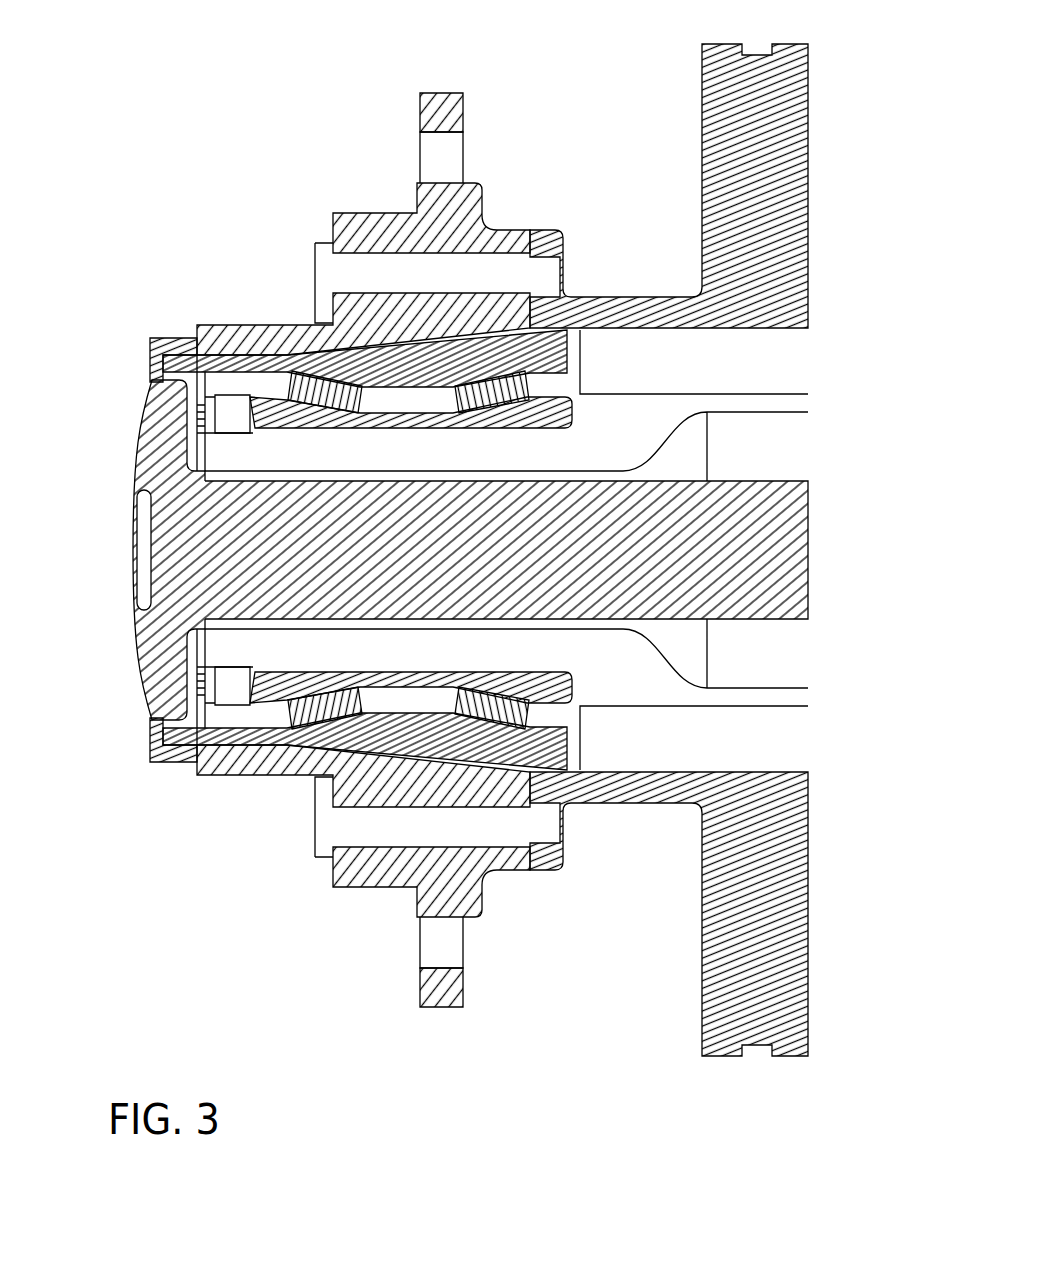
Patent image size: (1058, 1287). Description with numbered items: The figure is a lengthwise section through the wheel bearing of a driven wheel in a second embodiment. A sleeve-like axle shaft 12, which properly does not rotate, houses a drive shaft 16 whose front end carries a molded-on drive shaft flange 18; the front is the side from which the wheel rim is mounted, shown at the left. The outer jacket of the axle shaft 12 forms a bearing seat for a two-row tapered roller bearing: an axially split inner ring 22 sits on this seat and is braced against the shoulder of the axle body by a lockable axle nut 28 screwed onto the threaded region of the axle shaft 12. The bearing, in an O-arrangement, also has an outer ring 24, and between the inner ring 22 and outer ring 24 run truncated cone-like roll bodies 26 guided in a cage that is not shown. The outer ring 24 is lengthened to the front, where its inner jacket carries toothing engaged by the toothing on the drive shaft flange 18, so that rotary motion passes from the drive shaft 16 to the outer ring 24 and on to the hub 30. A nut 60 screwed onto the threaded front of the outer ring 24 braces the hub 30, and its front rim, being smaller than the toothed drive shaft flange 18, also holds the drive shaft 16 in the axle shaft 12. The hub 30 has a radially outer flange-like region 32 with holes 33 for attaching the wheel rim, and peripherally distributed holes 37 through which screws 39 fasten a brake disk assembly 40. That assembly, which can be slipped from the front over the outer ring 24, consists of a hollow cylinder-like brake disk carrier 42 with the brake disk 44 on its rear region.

The axle shaft 12 is at (777, 398).
The drive shaft 16 is at (785, 551).
The drive shaft flange 18 is at (163, 462).
The inner ring 22 is at (257, 697).
The outer ring 24 is at (540, 748).
The roll bodies 26 is at (317, 392).
The axle nut 28 is at (152, 757).
The hub 30 is at (417, 208).
The flange-like region 32 is at (441, 112).
The holes 33 is at (447, 157).
The holes 37 is at (377, 247).
The screws 39 is at (325, 272).
The brake disk assembly 40 is at (695, 805).
The brake disk carrier 42 is at (645, 315).
The brake disk 44 is at (775, 123).
The nut 60 is at (163, 347).